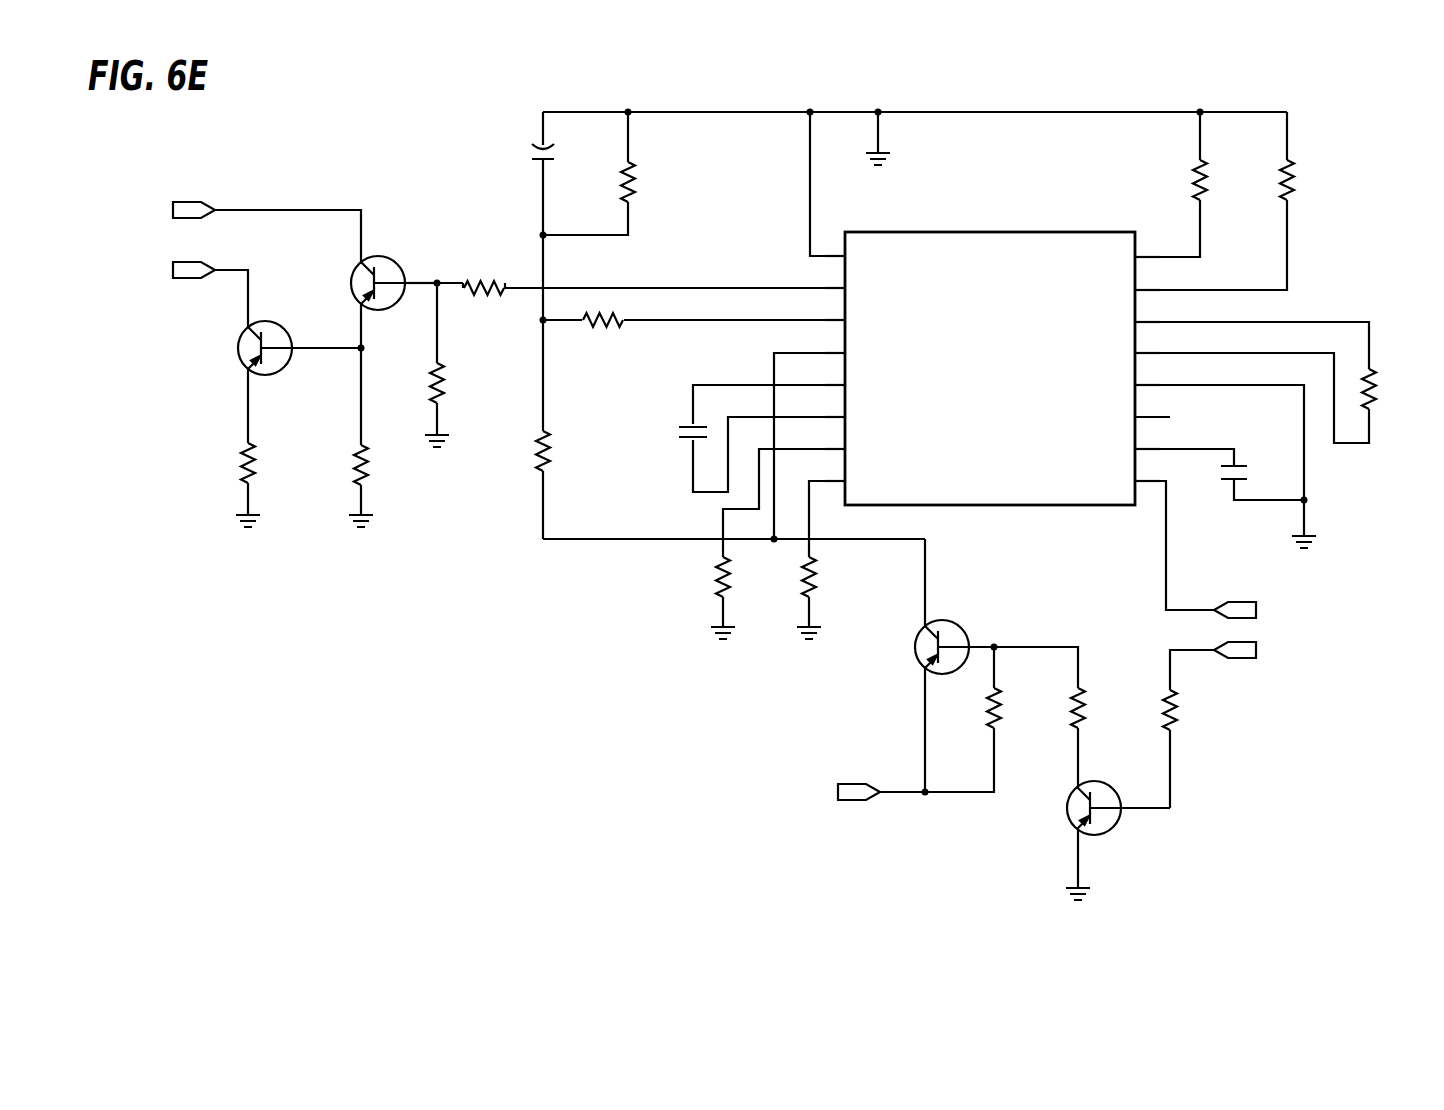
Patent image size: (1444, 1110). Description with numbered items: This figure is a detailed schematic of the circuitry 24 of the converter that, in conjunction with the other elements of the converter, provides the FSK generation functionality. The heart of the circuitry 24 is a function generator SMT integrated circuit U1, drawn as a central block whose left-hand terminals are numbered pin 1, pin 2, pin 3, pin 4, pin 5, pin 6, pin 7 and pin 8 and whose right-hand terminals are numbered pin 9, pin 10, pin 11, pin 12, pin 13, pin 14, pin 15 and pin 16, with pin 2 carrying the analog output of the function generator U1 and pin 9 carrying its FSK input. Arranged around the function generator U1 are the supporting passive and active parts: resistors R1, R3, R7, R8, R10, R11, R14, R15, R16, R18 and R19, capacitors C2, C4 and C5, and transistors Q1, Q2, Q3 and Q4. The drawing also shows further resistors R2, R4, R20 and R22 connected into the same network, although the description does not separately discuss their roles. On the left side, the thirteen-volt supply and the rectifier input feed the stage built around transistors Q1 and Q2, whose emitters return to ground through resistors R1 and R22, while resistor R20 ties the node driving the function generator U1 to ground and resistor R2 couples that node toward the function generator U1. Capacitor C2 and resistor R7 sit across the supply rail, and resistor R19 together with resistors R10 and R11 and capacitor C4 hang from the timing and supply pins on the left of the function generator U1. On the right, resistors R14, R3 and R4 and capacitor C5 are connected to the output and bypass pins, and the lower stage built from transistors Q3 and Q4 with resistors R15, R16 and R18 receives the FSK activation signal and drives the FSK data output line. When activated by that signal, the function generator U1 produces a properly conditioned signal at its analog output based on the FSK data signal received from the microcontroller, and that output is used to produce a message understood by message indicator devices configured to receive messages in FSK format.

The circuitry 24 is at (1362, 241).
The function generator SMT integrated circuit U1 is at (998, 352).
The transistor Q1 is at (281, 350).
The transistor Q2 is at (375, 285).
The transistor Q3 is at (936, 665).
The transistor Q4 is at (1100, 830).
The resistor R1 is at (234, 448).
The resistor R2 is at (640, 270).
The resistor R3 is at (1214, 201).
The resistor R4 is at (1271, 382).
The resistor R7 is at (605, 173).
The resistor R8 is at (694, 335).
The resistor R10 is at (702, 589).
The resistor R11 is at (789, 589).
The resistor R14 is at (1171, 184).
The resistor R15 is at (961, 721).
The resistor R16 is at (1061, 717).
The resistor R18 is at (1192, 729).
The resistor R19 is at (519, 451).
The resistor R20 is at (418, 365).
The resistor R22 is at (340, 415).
The capacitor C2 is at (529, 173).
The capacitor C4 is at (751, 438).
The capacitor C5 is at (1219, 474).
The U1 pin 1 AM_IN 1 is at (835, 245).
The U1 pin 2 AN_OUT 2 is at (835, 277).
The U1 pin 3 MULT.OUT 3 is at (835, 309).
The U1 pin 4 +VCC 4 is at (835, 342).
The U1 pin 5 T.CAP0 5 is at (835, 374).
The U1 pin 6 T.CAP1 6 is at (835, 406).
The U1 pin 7 T.RES0 7 is at (835, 438).
The U1 pin 8 T.RES1 8 is at (835, 470).
The U1 pin 9 FSK_IN 9 is at (1147, 470).
The U1 pin 10 BYPASS 10 is at (1153, 438).
The U1 pin 11 SYN.OUY 11 is at (1153, 406).
The U1 pin 12 GND 12 is at (1153, 374).
The U1 pin 13 WAVE1 13 is at (1153, 343).
The U1 pin 14 WAVE0 14 is at (1153, 311).
The U1 pin 15 SYM1 15 is at (1153, 279).
The U1 pin 16 SYM0 16 is at (1153, 246).